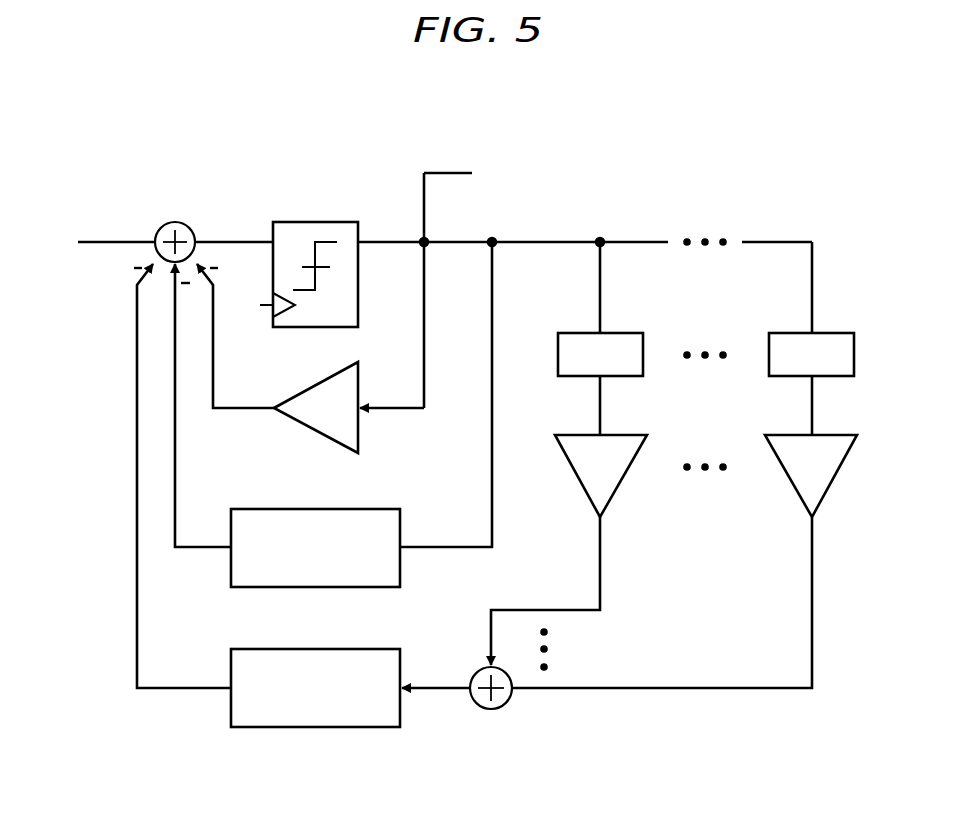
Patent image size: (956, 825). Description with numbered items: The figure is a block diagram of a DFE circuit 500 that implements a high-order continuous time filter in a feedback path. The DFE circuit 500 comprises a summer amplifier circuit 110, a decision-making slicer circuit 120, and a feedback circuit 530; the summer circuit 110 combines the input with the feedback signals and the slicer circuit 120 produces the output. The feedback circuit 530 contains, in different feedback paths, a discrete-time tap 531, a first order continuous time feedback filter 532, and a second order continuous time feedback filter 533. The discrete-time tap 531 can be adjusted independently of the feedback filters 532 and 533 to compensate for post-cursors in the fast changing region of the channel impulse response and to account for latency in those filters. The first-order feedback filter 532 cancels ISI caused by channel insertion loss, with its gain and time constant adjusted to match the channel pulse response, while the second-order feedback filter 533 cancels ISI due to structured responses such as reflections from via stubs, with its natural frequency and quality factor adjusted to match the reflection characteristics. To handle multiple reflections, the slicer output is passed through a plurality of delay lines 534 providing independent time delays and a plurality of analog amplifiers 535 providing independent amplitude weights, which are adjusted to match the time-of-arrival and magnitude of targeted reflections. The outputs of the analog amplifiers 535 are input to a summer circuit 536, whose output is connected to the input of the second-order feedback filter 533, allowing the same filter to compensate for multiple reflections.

The DFE circuit 500 is at (490, 88).
The summer amplifier circuit 110 is at (176, 221).
The decision-making slicer circuit 120 is at (312, 222).
The feedback circuit 530 is at (104, 290).
The discrete-time tap 531 is at (317, 382).
The first order continuous time feedback filter 532 is at (340, 508).
The high order continuous time feedback filter 533 is at (340, 648).
The delay lines 534 is at (790, 333).
The analog amplifiers 535 is at (790, 435).
The summer circuit 536 is at (491, 710).